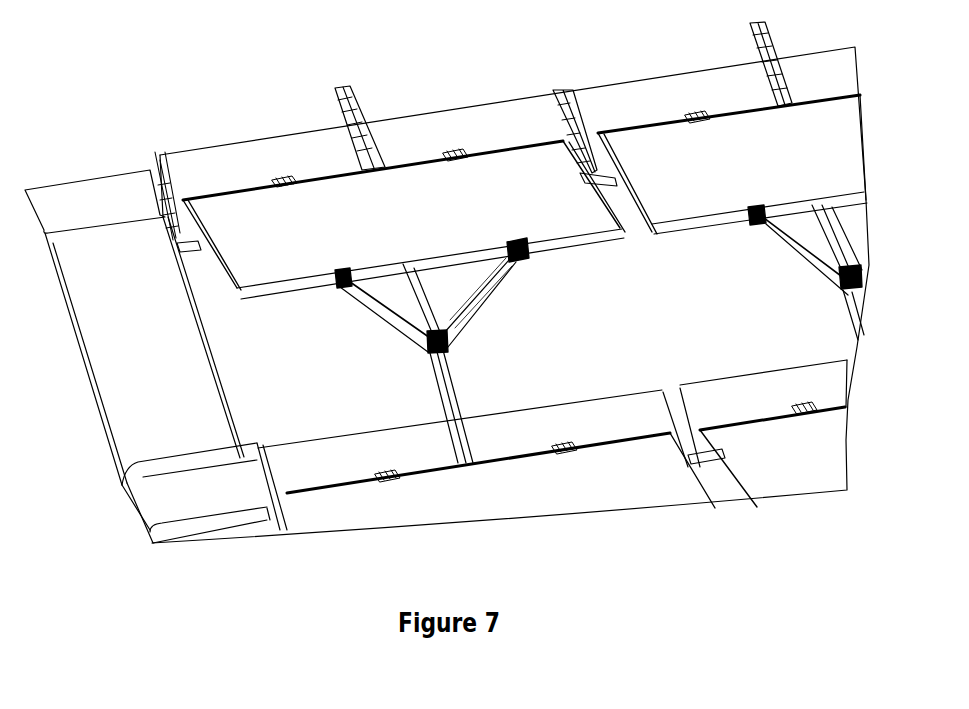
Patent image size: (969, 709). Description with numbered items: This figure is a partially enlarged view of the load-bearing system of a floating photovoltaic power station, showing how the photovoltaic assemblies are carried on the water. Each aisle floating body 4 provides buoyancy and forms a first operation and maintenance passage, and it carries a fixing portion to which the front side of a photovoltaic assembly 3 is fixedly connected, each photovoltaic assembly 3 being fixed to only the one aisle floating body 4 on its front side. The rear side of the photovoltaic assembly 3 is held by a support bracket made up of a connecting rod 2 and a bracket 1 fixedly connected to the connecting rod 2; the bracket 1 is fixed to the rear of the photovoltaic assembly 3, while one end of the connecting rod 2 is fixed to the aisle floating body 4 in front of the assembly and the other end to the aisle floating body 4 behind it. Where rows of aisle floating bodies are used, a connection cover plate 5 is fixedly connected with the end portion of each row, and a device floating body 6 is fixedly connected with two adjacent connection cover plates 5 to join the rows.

The bracket 1 is at (383, 325).
The connecting rod 2 is at (347, 90).
The photovoltaic assembly 3 is at (518, 193).
The aisle floating body 4 is at (242, 167).
The connection cover plate 5 is at (115, 195).
The device floating body 6 is at (132, 330).